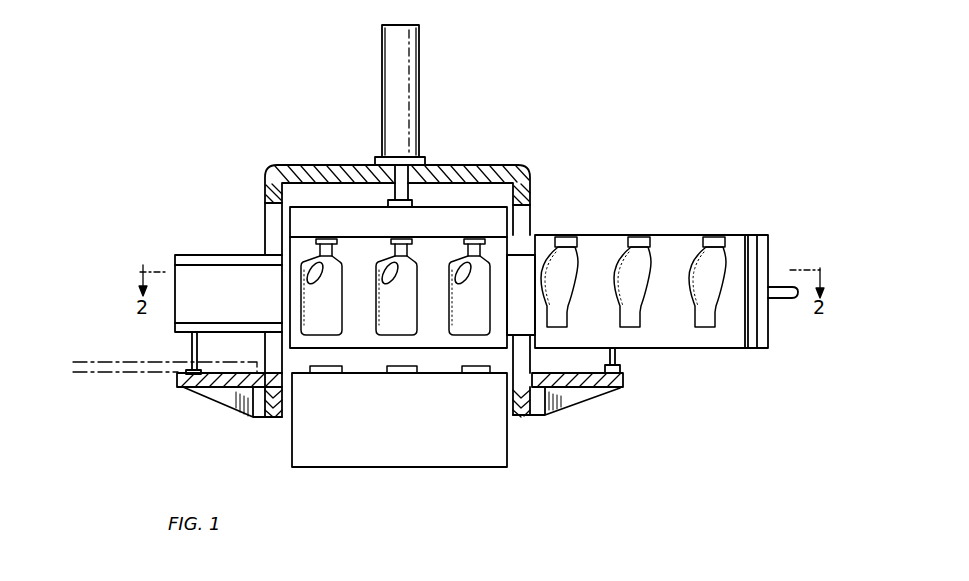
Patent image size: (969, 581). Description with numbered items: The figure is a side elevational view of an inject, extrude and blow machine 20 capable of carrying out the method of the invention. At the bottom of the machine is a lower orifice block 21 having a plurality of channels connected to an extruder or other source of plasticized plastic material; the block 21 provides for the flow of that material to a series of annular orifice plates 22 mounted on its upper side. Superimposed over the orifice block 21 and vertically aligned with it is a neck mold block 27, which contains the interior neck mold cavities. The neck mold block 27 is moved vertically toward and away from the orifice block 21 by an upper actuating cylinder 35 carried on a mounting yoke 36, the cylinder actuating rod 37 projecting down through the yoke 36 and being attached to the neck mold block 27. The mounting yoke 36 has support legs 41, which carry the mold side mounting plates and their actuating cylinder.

The inject, extrude and blow machine 20 is at (486, 221).
The lower orifice block 21 is at (413, 455).
The annular orifice plates 22 is at (332, 366).
The neck mold block 27 is at (375, 230).
The upper actuating cylinder 35 is at (408, 72).
The mounting yoke 36 is at (478, 170).
The cylinder actuating rod 37 is at (397, 190).
The support legs 41 is at (270, 418).